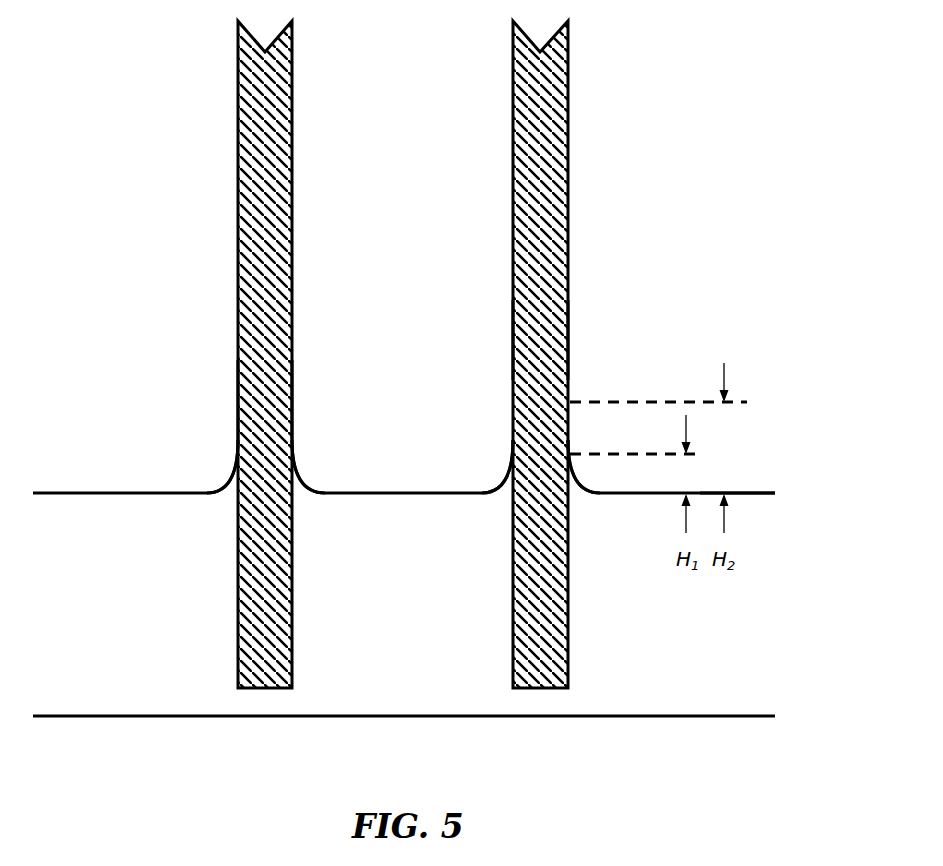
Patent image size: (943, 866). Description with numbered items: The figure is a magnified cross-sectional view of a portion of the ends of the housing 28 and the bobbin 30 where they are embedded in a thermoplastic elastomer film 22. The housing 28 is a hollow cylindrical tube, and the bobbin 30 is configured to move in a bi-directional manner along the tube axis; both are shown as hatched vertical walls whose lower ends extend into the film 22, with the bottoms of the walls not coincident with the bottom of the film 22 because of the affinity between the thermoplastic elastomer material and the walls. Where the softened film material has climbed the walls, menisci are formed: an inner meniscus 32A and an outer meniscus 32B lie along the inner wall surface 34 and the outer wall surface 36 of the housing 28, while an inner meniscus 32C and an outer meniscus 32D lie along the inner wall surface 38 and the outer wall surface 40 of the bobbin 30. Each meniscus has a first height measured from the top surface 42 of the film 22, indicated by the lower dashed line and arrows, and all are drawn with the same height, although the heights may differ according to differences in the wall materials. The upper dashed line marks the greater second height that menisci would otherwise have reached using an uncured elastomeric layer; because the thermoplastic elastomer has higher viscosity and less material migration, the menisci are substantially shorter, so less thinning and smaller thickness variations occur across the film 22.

The thermoplastic elastomer film 22 is at (418, 618).
The housing 28 is at (238, 225).
The bobbin 30 is at (513, 225).
The inner meniscus 32A is at (300, 480).
The outer meniscus 32B is at (225, 482).
The inner meniscus 32C is at (582, 478).
The outer meniscus 32D is at (500, 480).
The inner wall surface 34 is at (333, 374).
The outer wall surface 36 is at (236, 410).
The inner wall surface 38 is at (570, 342).
The outer wall surface 40 is at (511, 342).
The top surface 42 is at (740, 490).